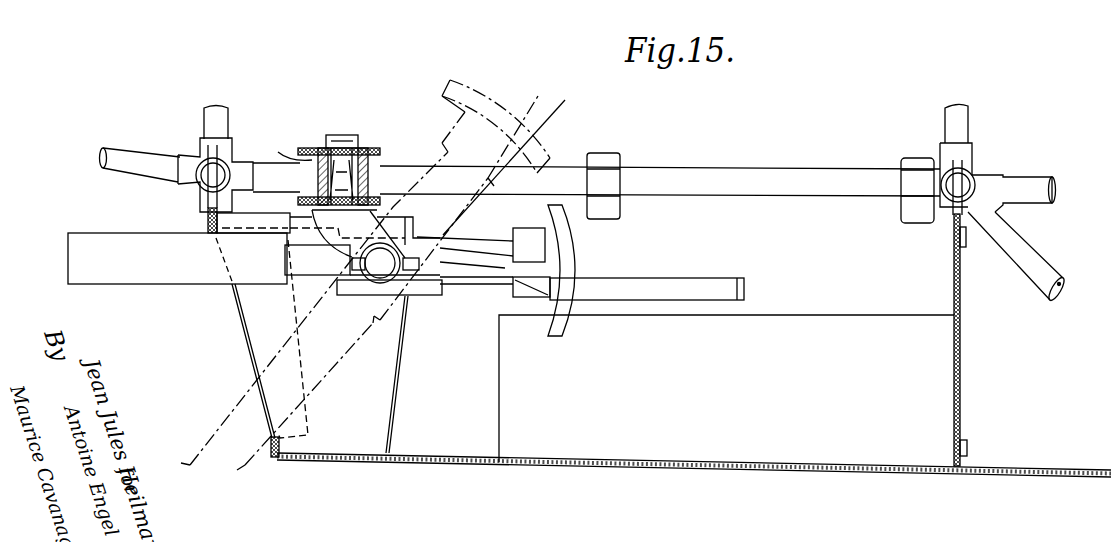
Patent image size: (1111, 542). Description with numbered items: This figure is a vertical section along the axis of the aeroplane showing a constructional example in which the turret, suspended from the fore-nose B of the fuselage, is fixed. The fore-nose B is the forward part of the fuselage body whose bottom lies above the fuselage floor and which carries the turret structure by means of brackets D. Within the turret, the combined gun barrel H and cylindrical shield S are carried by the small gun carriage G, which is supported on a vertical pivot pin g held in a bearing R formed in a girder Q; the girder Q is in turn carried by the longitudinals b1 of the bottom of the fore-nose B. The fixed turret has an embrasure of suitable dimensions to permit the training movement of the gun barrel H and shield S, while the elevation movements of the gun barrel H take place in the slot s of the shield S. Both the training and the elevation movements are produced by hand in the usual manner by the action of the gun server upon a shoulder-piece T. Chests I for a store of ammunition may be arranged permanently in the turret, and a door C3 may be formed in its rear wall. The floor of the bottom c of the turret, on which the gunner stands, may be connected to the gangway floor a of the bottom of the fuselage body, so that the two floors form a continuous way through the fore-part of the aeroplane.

The fore-nose B is at (211, 120).
The girder Q is at (287, 150).
The bearing R is at (322, 148).
The vertical pivot pin g is at (354, 162).
The small gun carriage G is at (365, 235).
The gun barrel H is at (109, 270).
The shoulder-piece T is at (574, 258).
The brackets D is at (612, 174).
The longitudinals b1 is at (752, 184).
The chests I is at (828, 328).
The door C3 is at (960, 372).
The floor of the turret c is at (681, 465).
The gangway floor a is at (1055, 470).
The slot s is at (248, 334).
The cylindrical shield S is at (380, 364).